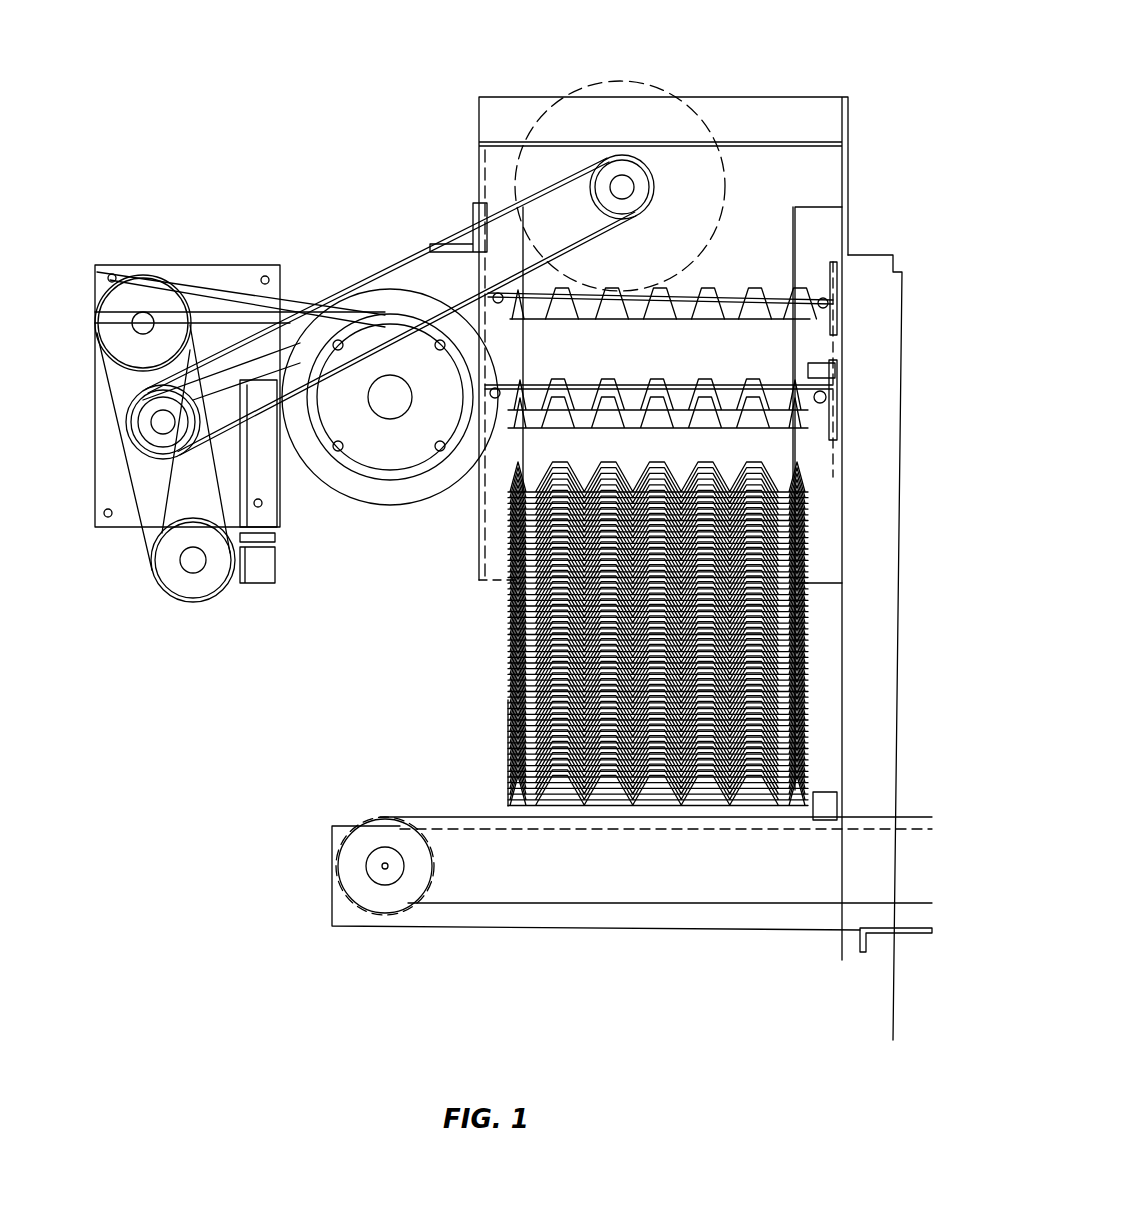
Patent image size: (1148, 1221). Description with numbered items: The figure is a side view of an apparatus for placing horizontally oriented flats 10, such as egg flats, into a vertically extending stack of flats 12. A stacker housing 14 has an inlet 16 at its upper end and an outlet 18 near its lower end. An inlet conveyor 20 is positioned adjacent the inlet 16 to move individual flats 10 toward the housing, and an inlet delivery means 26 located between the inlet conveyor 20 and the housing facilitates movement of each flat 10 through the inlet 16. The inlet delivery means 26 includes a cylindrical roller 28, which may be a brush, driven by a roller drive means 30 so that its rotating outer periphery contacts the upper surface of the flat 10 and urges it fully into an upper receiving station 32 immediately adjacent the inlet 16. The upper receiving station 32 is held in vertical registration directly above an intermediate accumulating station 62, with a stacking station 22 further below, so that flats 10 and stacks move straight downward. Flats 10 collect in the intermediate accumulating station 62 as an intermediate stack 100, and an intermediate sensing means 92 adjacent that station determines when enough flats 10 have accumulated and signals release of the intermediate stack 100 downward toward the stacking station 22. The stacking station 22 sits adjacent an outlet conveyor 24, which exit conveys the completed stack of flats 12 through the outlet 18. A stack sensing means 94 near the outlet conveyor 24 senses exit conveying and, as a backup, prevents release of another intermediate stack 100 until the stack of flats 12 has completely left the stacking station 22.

The flat 10 is at (708, 290).
The stack of flats 12 is at (500, 657).
The stacker housing 14 is at (848, 155).
The inlet 16 is at (510, 262).
The outlet 18 is at (828, 700).
The inlet conveyor 20 is at (240, 320).
The stacking station 22 is at (500, 742).
The outlet conveyor 24 is at (766, 835).
The inlet delivery means 26 is at (625, 175).
The cylindrical roller 28 is at (530, 125).
The roller drive means 30 is at (329, 463).
The upper receiving station 32 is at (828, 248).
The intermediate accumulating station 62 is at (810, 400).
The intermediate sensing means 92 is at (818, 372).
The stack sensing means 94 is at (822, 810).
The intermediate stack 100 is at (660, 410).